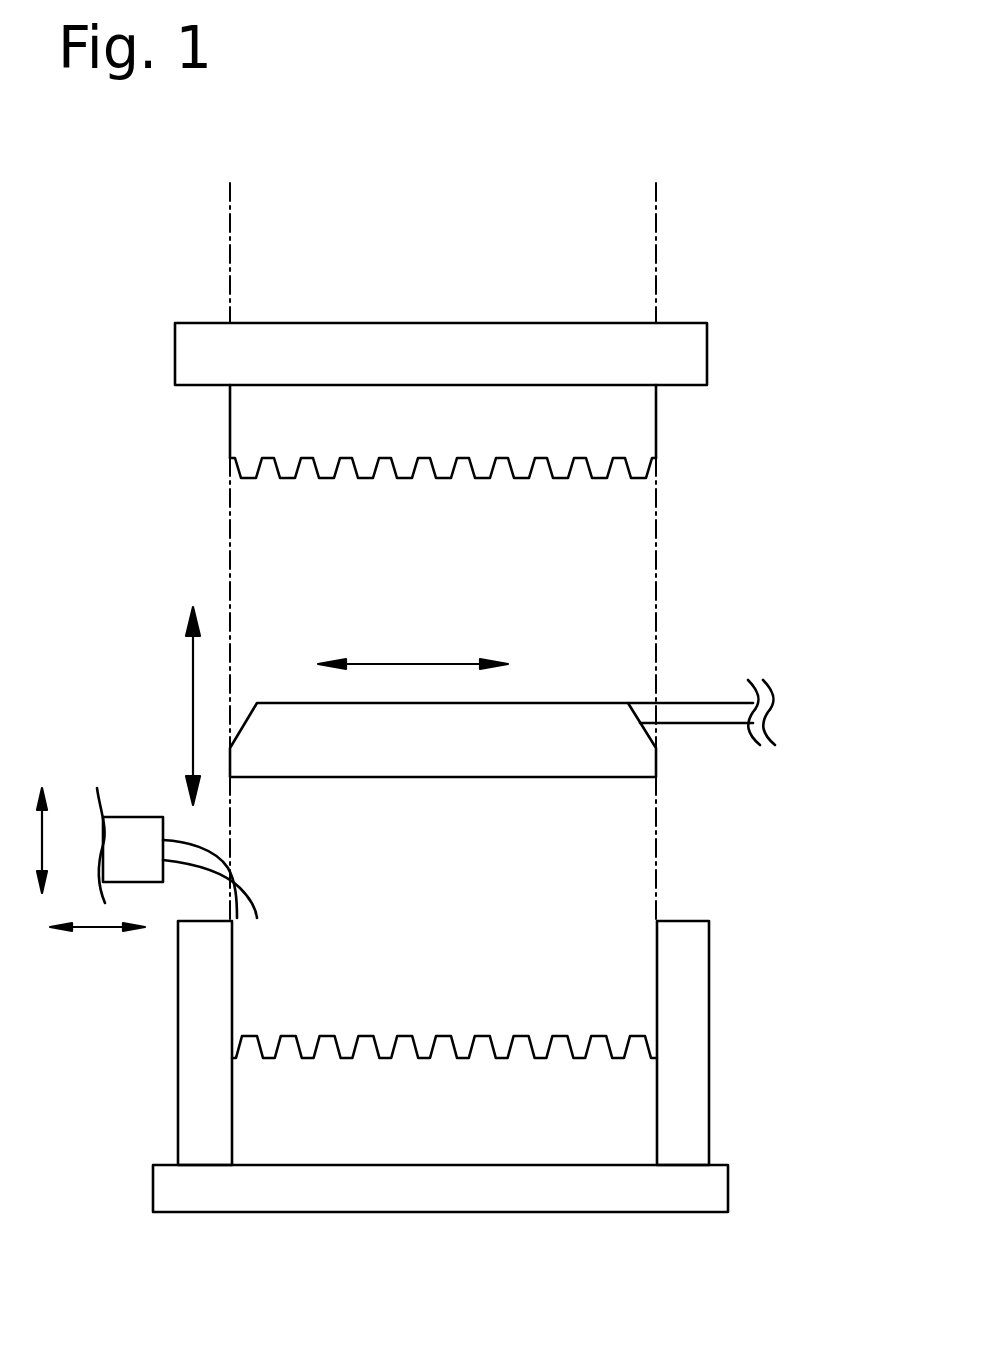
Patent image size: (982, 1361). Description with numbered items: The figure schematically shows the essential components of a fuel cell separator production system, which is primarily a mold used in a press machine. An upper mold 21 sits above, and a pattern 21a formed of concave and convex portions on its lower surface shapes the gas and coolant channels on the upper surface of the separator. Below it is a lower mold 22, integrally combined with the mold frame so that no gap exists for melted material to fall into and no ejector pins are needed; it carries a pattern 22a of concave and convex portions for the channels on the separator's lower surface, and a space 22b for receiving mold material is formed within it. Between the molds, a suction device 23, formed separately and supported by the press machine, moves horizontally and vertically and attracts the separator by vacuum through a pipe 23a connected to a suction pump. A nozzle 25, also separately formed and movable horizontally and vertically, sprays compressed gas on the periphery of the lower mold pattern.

The upper mold 21 is at (383, 333).
The pattern 21a is at (455, 467).
The lower mold 22 is at (693, 1052).
The pattern 22a is at (512, 1042).
The space 22b is at (358, 991).
The suction device 23 is at (548, 757).
The pipe 23a is at (690, 713).
The nozzle 25 is at (137, 827).